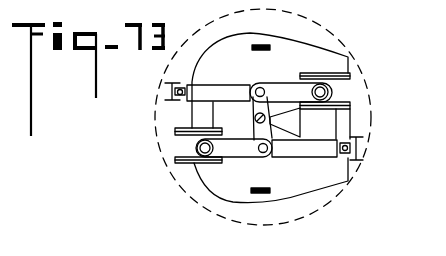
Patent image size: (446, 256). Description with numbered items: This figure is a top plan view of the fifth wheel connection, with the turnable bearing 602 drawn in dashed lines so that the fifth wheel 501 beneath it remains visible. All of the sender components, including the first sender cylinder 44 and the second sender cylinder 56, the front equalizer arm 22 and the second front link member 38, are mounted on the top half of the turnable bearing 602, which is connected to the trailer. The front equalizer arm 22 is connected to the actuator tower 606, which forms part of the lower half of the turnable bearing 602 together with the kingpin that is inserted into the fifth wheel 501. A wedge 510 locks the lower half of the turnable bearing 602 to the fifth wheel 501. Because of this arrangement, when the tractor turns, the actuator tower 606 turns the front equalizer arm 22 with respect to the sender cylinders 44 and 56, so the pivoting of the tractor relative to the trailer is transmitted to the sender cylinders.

The fifth wheel 501 is at (240, 181).
The turnable bearing 602 is at (327, 37).
The first sender cylinder 44 is at (222, 89).
The second front link member 38 is at (212, 162).
The front equalizer arm 22 is at (275, 128).
The wedge 510 is at (333, 124).
The actuator tower 606 is at (231, 84).
The second sender cylinder 56 is at (282, 132).